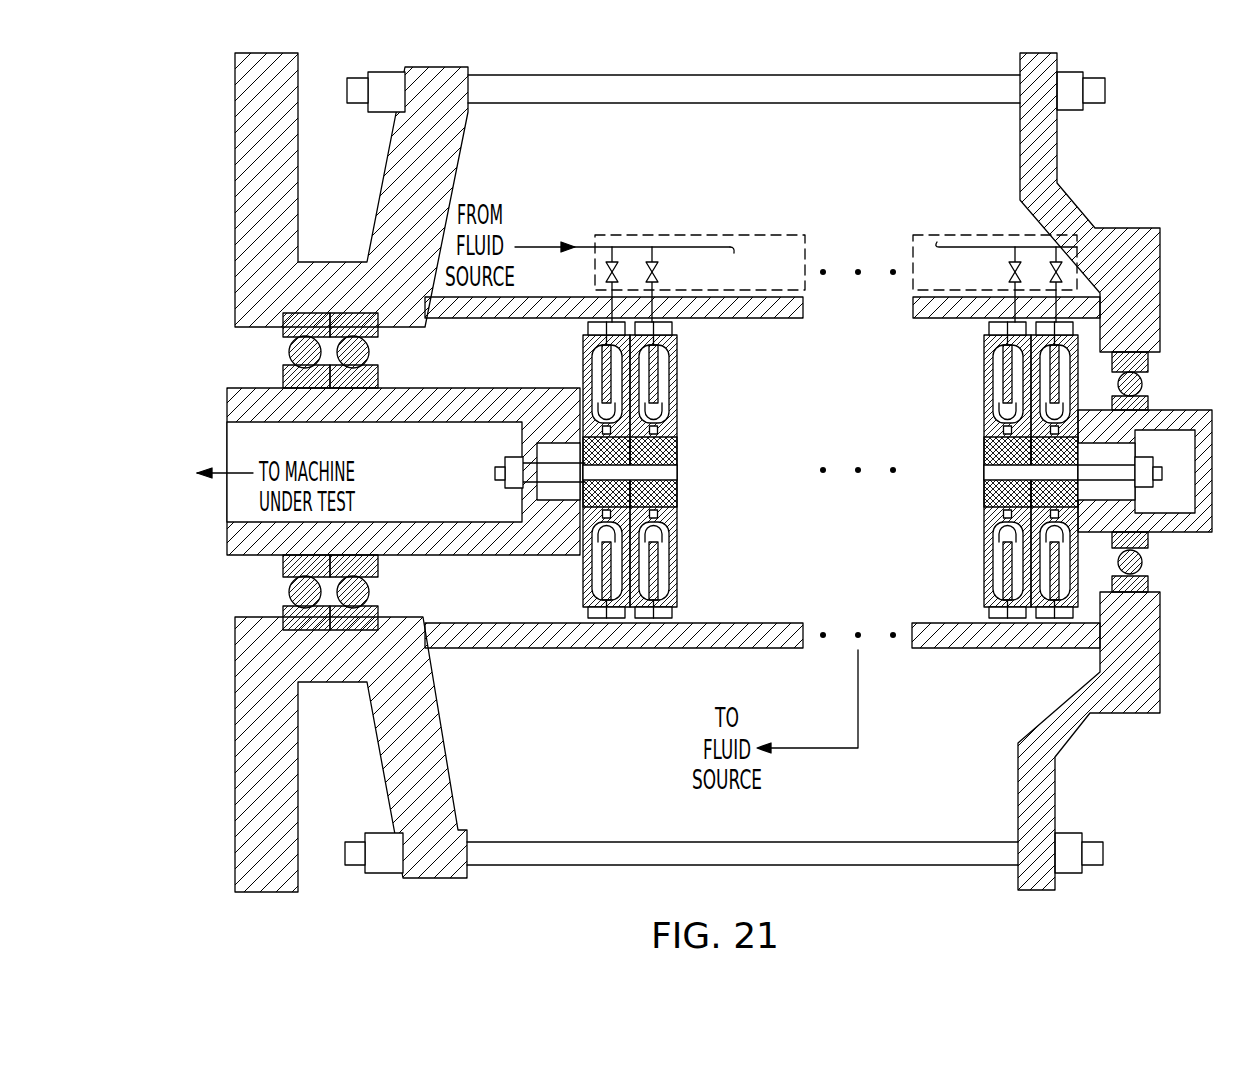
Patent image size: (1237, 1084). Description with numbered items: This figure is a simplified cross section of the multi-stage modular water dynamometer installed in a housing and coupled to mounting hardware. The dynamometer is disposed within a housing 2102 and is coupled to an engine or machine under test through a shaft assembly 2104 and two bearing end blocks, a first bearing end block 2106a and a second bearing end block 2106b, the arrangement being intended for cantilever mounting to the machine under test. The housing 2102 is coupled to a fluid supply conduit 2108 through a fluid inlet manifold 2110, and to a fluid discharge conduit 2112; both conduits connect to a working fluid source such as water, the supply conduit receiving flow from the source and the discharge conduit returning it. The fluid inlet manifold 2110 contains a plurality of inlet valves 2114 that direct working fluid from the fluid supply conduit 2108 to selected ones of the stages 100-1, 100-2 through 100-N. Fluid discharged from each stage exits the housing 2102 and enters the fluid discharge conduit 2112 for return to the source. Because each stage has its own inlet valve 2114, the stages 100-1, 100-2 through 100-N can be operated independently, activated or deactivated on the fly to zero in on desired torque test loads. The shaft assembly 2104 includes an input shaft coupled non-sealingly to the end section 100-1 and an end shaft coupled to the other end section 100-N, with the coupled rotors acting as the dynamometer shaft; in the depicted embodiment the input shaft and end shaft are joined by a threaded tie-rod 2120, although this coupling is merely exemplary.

The first bearing end block 2106a is at (467, 149).
The second bearing end block 2106b is at (1075, 203).
The housing 2102 is at (730, 320).
The shaft assembly 2104 is at (527, 387).
The fluid supply conduit 2108 is at (582, 240).
The fluid inlet manifold 2110 is at (700, 235).
The fluid discharge conduit 2112 is at (858, 710).
The inlet valve 2114 is at (605, 272).
The threaded tie-rod 2120 is at (1115, 442).
The first stage 100-1 is at (607, 620).
The second stage 100-2 is at (657, 620).
The Nth stage 100-N is at (1050, 620).